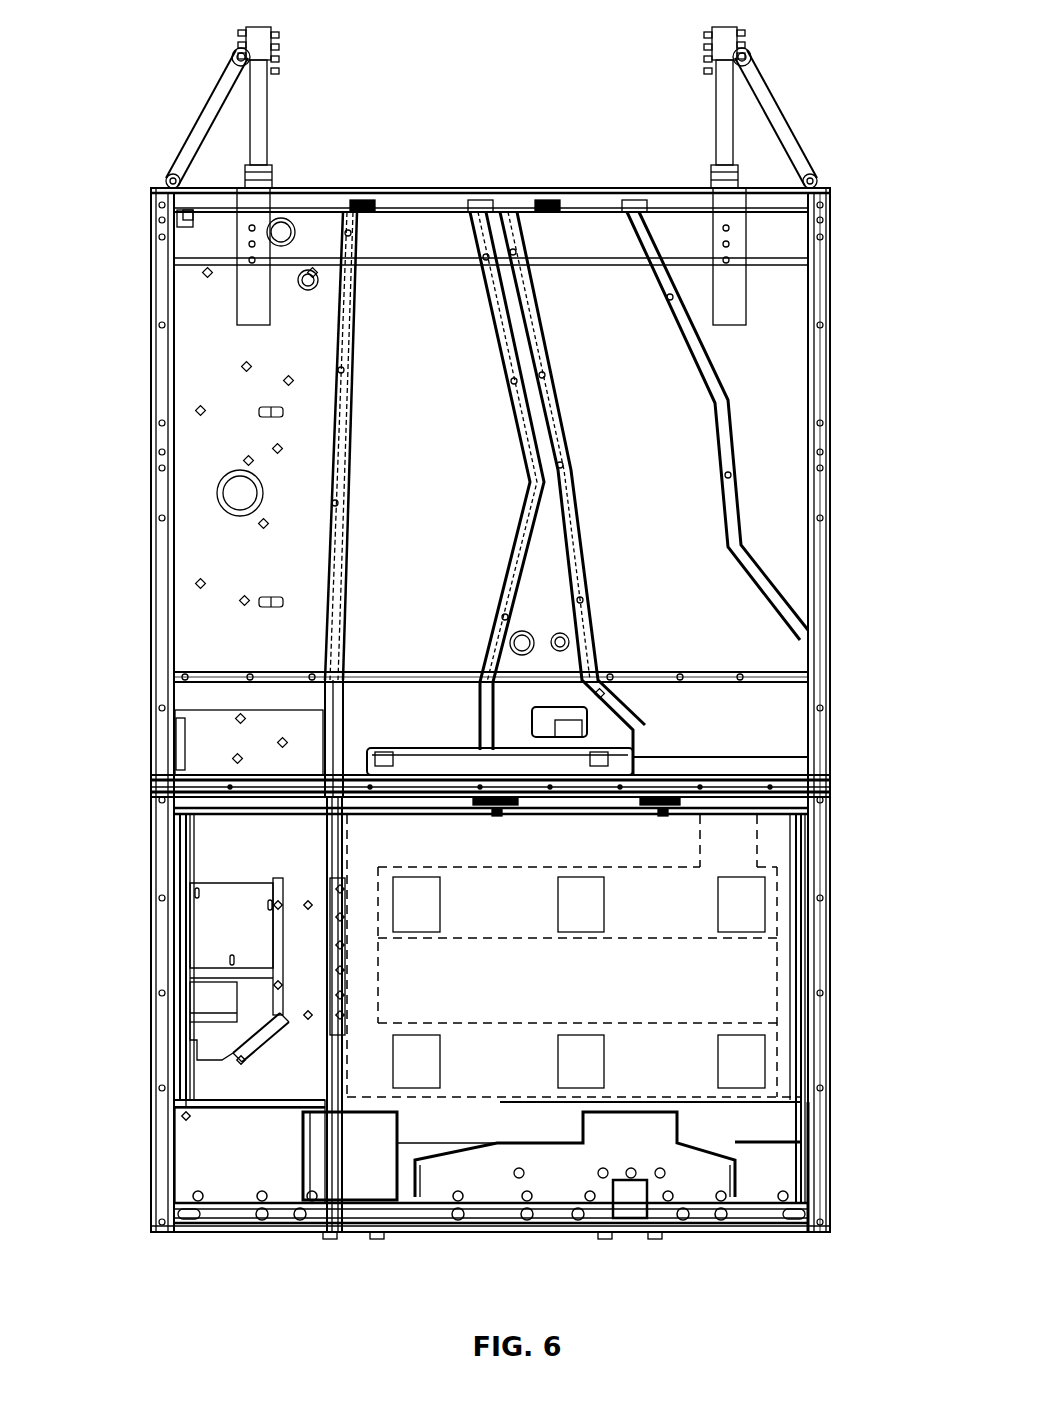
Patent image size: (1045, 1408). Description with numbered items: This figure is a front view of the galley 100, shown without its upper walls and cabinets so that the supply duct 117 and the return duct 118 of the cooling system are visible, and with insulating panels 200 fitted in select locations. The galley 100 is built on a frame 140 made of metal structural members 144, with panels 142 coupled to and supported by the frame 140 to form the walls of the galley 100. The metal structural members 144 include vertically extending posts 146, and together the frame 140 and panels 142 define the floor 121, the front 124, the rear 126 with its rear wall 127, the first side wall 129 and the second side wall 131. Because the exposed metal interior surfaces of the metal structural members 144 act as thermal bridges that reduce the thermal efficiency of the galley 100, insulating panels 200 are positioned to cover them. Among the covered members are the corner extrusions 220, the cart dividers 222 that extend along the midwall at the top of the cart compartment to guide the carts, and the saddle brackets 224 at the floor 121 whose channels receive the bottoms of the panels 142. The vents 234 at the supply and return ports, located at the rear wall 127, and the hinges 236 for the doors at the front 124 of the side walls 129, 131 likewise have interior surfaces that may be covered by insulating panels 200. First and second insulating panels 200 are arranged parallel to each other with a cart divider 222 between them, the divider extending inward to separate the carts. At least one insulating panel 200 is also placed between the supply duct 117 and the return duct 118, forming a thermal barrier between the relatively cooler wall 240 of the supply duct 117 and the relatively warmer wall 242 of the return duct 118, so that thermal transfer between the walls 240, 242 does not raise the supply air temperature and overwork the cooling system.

The galley 100 is at (810, 44).
The frame 140 is at (834, 580).
The panels 142 is at (788, 522).
The metal structural members 144 is at (178, 810).
The posts 146 is at (818, 687).
The return duct 118 is at (425, 243).
The supply duct 117 is at (552, 232).
The wall of the supply duct 240 is at (523, 240).
The wall of the return duct 242 is at (478, 235).
The insulating panels 200 is at (535, 397).
The cart dividers 222 is at (700, 810).
The corner extrusions 220 is at (177, 905).
The first side wall 129 is at (822, 912).
The rear 126 is at (755, 990).
The second side wall 131 is at (155, 1015).
The rear wall 127 is at (232, 1078).
The hinges 236 is at (165, 1145).
The vents 234 is at (442, 1065).
The saddle brackets 224 is at (695, 1177).
The front 124 is at (820, 1140).
The floor 121 is at (765, 1222).